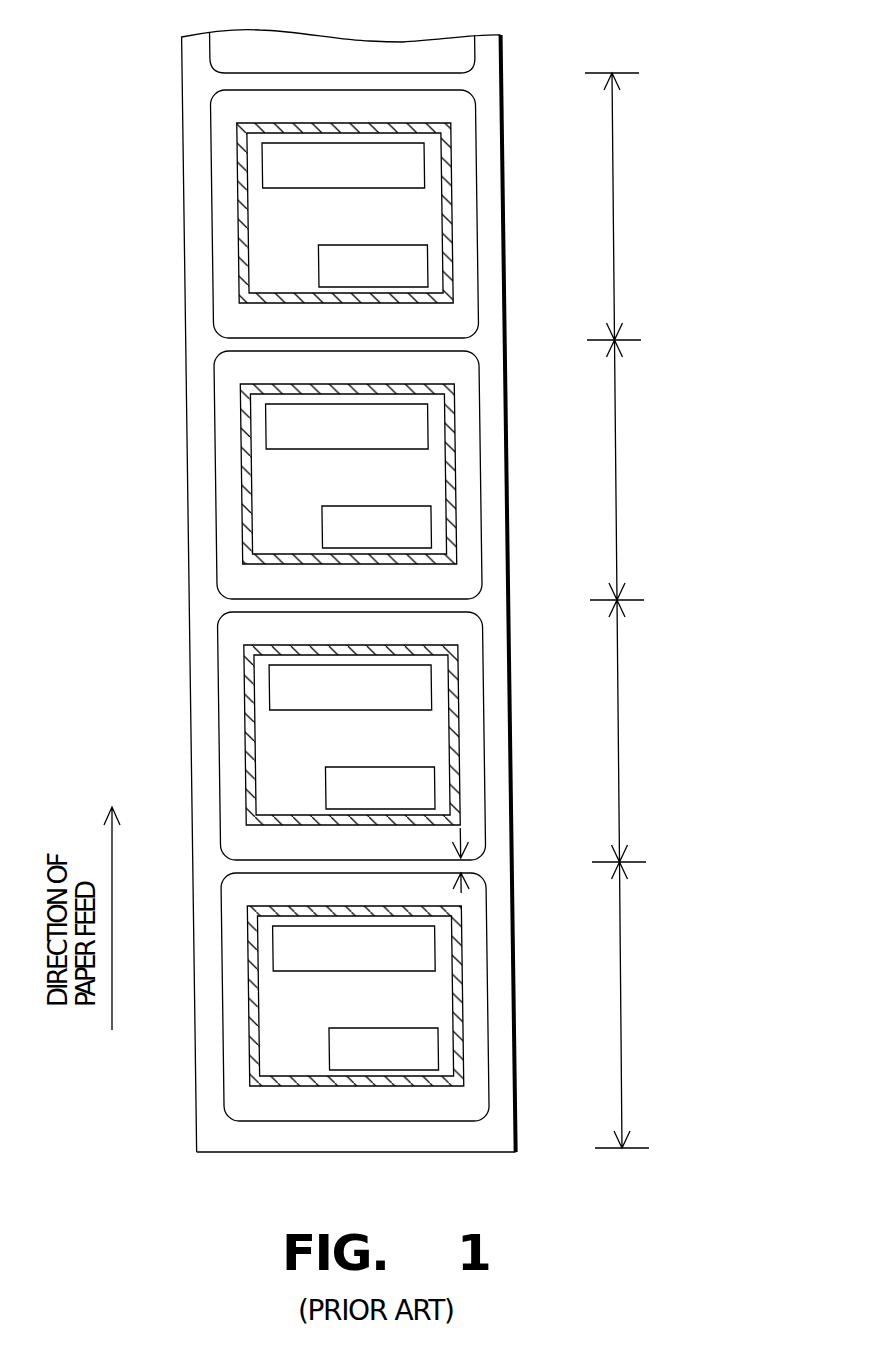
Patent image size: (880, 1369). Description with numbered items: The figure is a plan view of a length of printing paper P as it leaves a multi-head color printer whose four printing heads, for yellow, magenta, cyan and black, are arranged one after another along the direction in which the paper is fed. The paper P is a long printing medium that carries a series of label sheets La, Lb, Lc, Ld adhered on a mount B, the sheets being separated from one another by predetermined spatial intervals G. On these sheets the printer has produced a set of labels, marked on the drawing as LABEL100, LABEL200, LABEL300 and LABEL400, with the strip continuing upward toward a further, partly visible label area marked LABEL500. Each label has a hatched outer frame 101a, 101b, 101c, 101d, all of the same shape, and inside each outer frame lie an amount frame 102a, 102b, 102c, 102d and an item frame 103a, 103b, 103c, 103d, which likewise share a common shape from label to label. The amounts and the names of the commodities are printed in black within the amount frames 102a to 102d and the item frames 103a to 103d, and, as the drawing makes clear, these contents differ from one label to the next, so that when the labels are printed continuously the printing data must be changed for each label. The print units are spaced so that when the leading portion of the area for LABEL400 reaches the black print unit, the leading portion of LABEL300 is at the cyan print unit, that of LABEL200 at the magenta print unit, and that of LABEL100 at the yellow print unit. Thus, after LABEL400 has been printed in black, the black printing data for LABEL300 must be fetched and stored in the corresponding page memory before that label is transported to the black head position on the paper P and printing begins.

The printing paper P is at (183, 378).
The mount B is at (482, 343).
The spatial interval G is at (462, 866).
The label sheet La is at (489, 990).
The label sheet Lb is at (486, 697).
The label sheet Lc is at (483, 450).
The label sheet Ld is at (478, 190).
The hatched outer frame 101a is at (248, 1057).
The hatched outer frame 101b is at (245, 694).
The hatched outer frame 101c is at (241, 439).
The hatched outer frame 101d is at (238, 180).
The amount frame 102a is at (318, 1045).
The amount frame 102b is at (318, 784).
The amount frame 102c is at (318, 523).
The amount frame 102d is at (318, 262).
The item frame 103a is at (360, 971).
The item frame 103b is at (360, 710).
The item frame 103c is at (360, 449).
The item frame 103d is at (360, 188).
The label 100 LABEL100 is at (665, 1005).
The label 200 LABEL200 is at (664, 731).
The label 300 LABEL300 is at (660, 470).
The label 400 LABEL400 is at (656, 206).
The label 500 (partial) LABEL500 is at (336, 48).